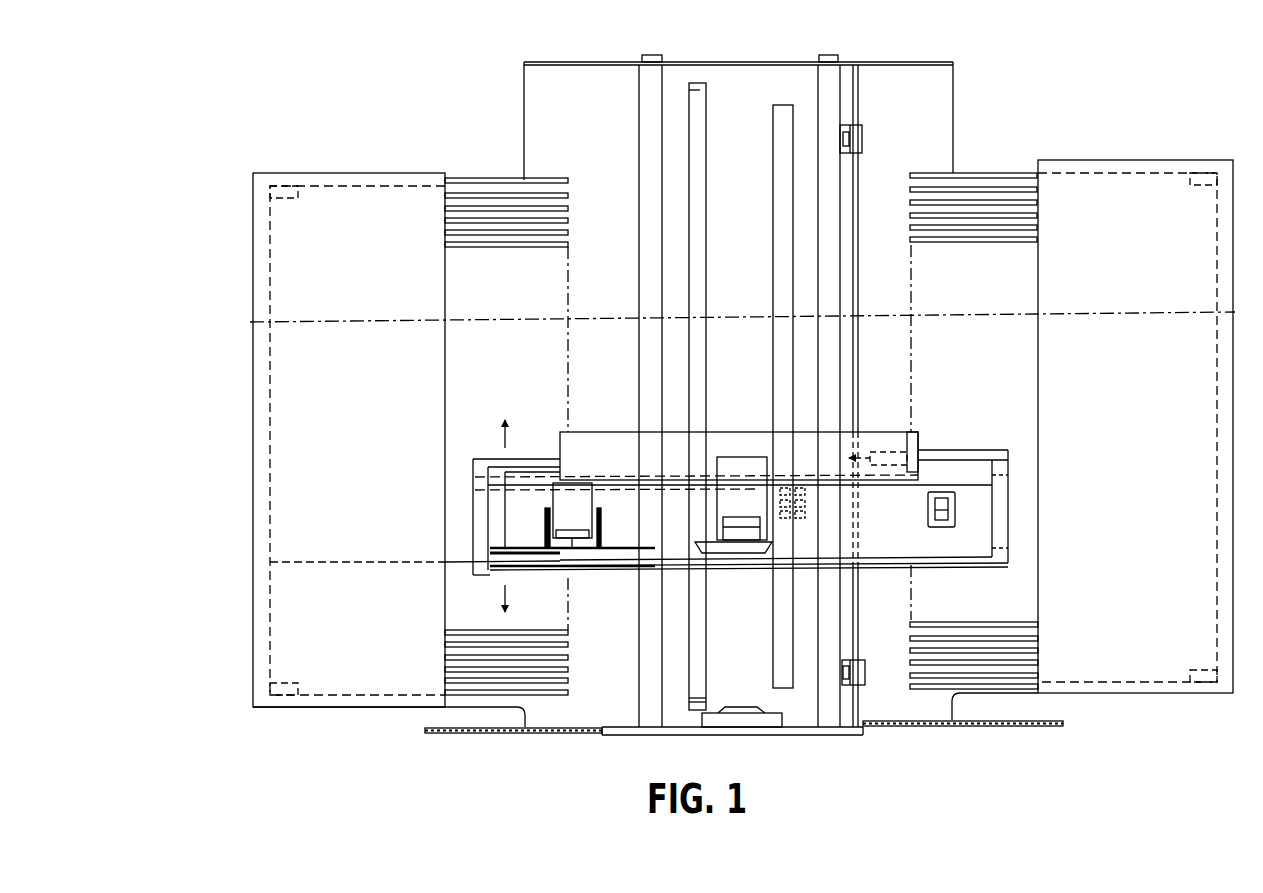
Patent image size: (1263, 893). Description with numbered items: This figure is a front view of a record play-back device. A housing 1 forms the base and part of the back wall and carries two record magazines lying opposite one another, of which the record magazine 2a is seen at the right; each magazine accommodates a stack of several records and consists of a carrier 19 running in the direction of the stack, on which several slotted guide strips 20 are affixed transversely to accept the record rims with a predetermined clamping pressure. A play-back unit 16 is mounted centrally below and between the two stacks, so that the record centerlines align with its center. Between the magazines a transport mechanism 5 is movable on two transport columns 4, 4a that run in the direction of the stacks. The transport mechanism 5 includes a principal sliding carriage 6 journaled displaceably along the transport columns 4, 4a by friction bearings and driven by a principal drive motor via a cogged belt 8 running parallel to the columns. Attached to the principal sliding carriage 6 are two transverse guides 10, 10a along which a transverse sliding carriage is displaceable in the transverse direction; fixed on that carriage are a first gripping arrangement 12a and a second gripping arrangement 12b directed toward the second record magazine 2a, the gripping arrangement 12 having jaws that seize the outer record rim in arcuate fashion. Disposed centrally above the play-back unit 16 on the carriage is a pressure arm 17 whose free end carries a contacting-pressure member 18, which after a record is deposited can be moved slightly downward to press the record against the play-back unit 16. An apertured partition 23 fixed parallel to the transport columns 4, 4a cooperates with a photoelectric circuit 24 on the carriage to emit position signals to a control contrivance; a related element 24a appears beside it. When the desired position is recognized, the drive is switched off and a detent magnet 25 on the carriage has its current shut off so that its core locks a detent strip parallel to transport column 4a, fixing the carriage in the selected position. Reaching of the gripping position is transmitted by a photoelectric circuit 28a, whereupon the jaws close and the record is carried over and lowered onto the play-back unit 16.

The housing 1 is at (452, 735).
The record magazine 2a is at (1130, 160).
The transport column 4 is at (639, 110).
The transport column 4a is at (830, 118).
The transport mechanism 5 is at (553, 420).
The principal sliding carriage 6 is at (480, 468).
The cogged belt 8 is at (698, 100).
The transverse guide 10 is at (970, 478).
The transverse guide 10a is at (960, 553).
The gripping arrangement 12 is at (550, 605).
The first gripping arrangement 12a is at (525, 572).
The second gripping arrangement 12b is at (608, 572).
The play-back unit 16 is at (788, 727).
The pressure arm 17 is at (737, 556).
The contacting-pressure member 18 is at (732, 553).
The carrier 19 is at (338, 450).
The slotted guide strip 20 is at (258, 464).
The apertured partition 23 is at (780, 117).
The photoelectric circuit 24 is at (792, 508).
The cable guide 24a is at (820, 472).
The detent magnet 25 is at (952, 440).
The photoelectric circuit 28a is at (948, 505).